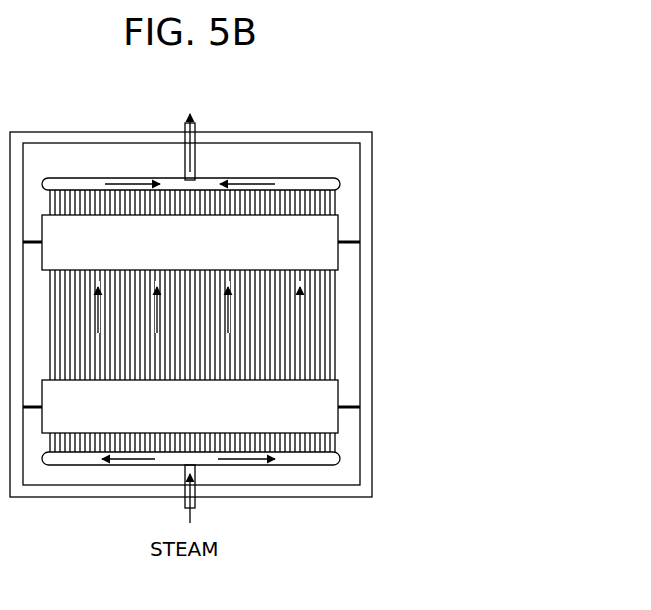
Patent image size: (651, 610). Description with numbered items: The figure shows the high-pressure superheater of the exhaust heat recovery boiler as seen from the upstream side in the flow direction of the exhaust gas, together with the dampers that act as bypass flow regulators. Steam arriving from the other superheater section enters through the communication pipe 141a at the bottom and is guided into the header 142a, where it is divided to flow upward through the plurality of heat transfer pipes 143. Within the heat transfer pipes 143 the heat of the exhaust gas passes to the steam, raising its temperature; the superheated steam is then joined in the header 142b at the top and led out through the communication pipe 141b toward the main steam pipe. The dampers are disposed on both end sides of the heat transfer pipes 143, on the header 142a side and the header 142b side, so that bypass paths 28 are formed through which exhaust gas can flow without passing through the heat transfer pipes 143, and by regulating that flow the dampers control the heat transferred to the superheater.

The bypass path 28 is at (127, 160).
The communication pipe 141a is at (197, 503).
The communication pipe 141b is at (200, 126).
The header 142a is at (340, 458).
The header 142b is at (340, 184).
The heat transfer pipe 143 is at (330, 322).